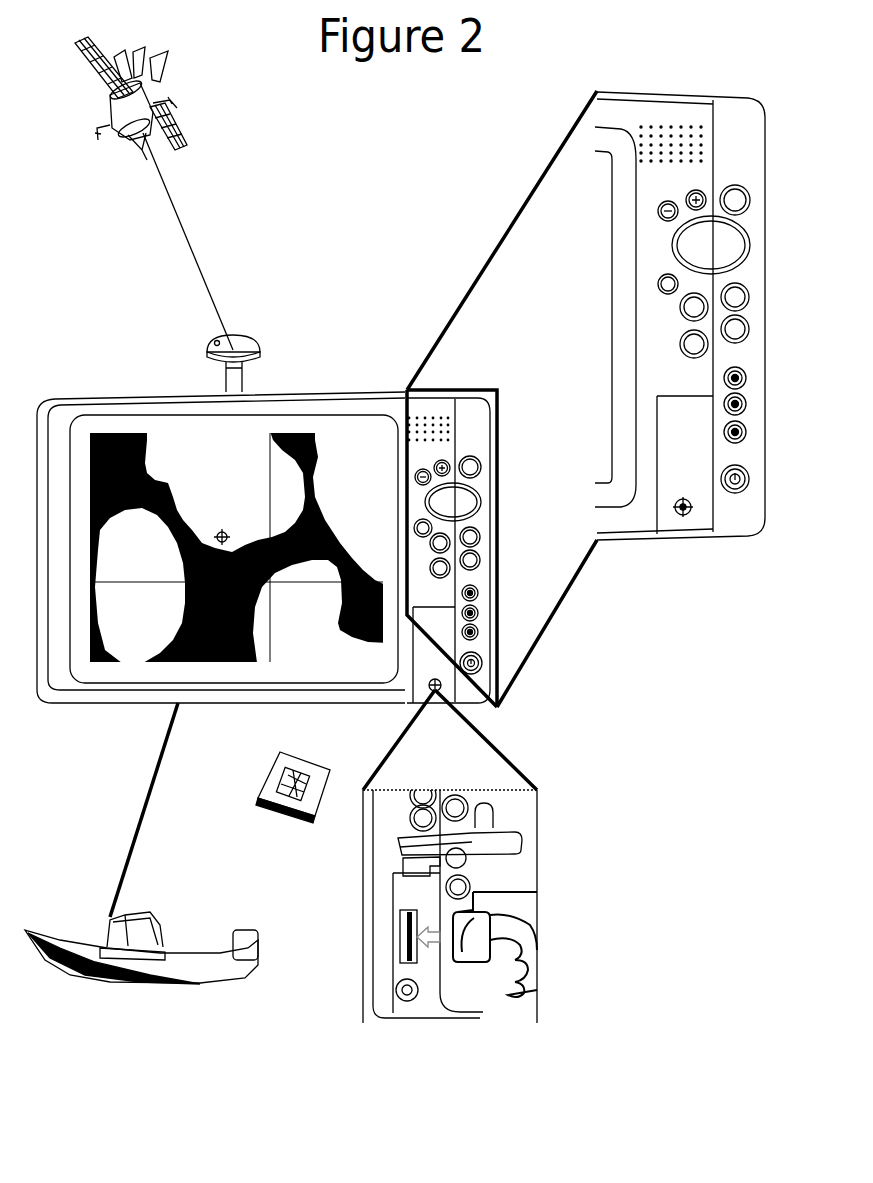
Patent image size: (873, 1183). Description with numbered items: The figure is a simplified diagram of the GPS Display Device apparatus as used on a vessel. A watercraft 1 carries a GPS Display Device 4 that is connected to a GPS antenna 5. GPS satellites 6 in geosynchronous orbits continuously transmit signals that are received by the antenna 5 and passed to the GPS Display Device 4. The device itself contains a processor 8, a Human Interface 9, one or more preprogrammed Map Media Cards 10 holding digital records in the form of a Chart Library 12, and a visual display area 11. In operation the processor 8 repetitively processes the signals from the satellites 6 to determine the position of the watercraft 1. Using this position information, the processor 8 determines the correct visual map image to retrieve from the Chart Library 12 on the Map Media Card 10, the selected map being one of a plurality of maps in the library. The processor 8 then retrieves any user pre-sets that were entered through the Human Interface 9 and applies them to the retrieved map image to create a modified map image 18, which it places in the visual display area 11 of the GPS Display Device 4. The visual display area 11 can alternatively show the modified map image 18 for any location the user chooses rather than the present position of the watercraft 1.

The watercraft 1 is at (142, 843).
The GPS Display Device 4 is at (368, 392).
The GPS antenna 5 is at (263, 354).
The GPS satellites 6 is at (155, 193).
The processor 8 is at (253, 700).
The Human Interface 9 is at (586, 399).
The Map Media Card 10 is at (460, 952).
The visual display area 11 is at (382, 437).
The Chart Library 12 is at (220, 533).
The modified map image 18 is at (200, 607).